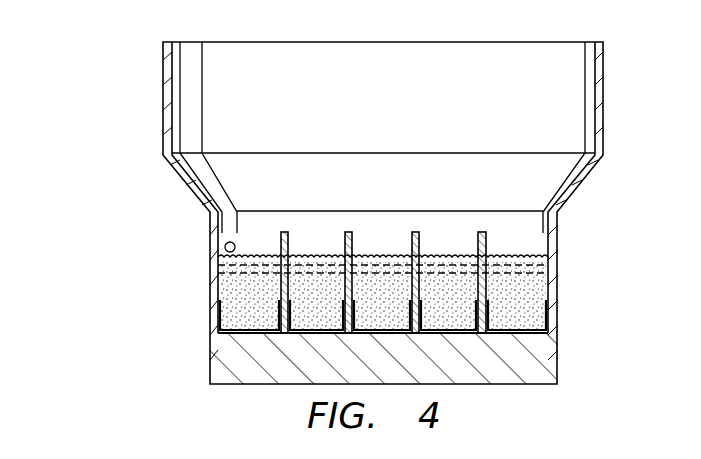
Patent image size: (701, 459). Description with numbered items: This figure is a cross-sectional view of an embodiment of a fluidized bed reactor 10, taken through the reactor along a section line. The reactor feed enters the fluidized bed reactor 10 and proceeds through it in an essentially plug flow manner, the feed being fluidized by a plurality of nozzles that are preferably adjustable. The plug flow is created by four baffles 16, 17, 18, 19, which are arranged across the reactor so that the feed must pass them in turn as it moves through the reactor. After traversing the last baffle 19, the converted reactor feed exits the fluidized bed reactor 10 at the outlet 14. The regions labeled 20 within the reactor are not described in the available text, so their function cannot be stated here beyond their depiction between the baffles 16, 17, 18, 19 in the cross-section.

The fluidized bed reactor 10 is at (641, 79).
The outlet 14 is at (225, 249).
The baffle 16 is at (482, 232).
The baffle 17 is at (415, 232).
The baffle 18 is at (348, 232).
The baffle 19 is at (284, 232).
The cell compartment with electrolyte 20 is at (237, 308).